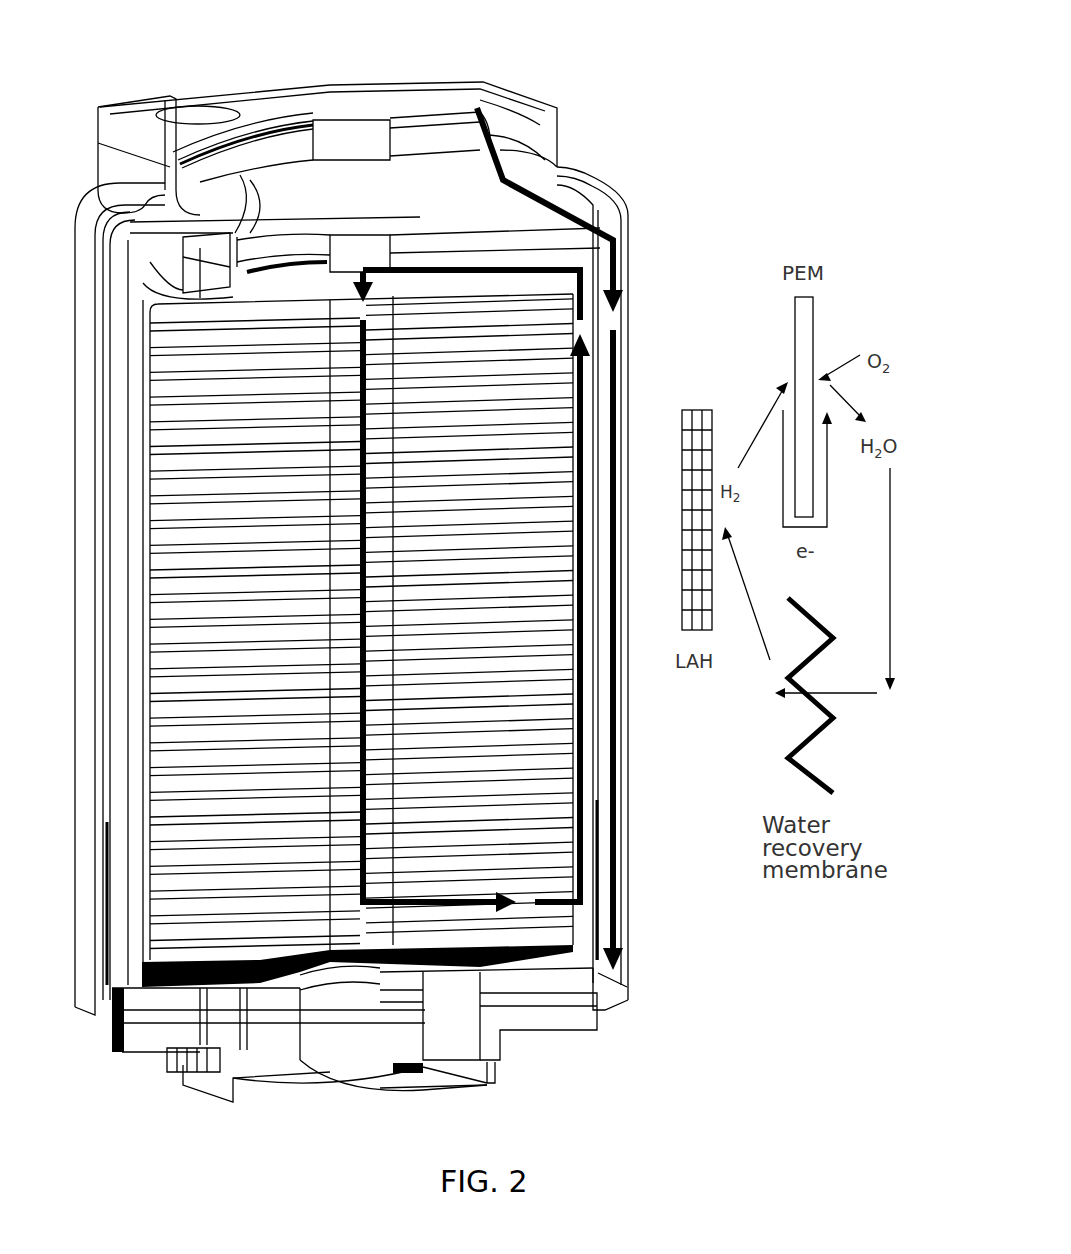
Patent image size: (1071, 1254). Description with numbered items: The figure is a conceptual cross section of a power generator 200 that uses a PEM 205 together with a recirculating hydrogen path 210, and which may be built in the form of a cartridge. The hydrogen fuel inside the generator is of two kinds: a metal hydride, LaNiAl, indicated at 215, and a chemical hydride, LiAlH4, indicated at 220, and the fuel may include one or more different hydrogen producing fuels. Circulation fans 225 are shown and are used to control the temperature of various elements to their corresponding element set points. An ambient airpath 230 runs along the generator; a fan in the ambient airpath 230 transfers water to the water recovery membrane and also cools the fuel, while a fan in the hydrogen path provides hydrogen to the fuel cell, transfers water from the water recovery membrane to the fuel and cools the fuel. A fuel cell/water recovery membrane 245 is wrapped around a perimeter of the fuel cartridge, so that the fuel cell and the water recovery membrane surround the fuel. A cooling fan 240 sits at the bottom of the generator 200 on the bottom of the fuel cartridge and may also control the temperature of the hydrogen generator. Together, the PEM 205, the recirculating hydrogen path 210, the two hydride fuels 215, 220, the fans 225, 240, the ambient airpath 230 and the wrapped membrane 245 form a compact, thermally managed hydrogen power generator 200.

The power generator 200 is at (776, 63).
The PEM 205 is at (108, 294).
The recirculating hydrogen path 210 is at (578, 752).
The LaNiAl metal hydride 215 is at (187, 935).
The LiAlH4 chemical hydride 220 is at (545, 687).
The circulation fans 225 is at (208, 250).
The ambient airpath 230 is at (607, 218).
The cooling fan 240 is at (417, 1073).
The fuel cell/water recovery membrane 245 is at (122, 893).